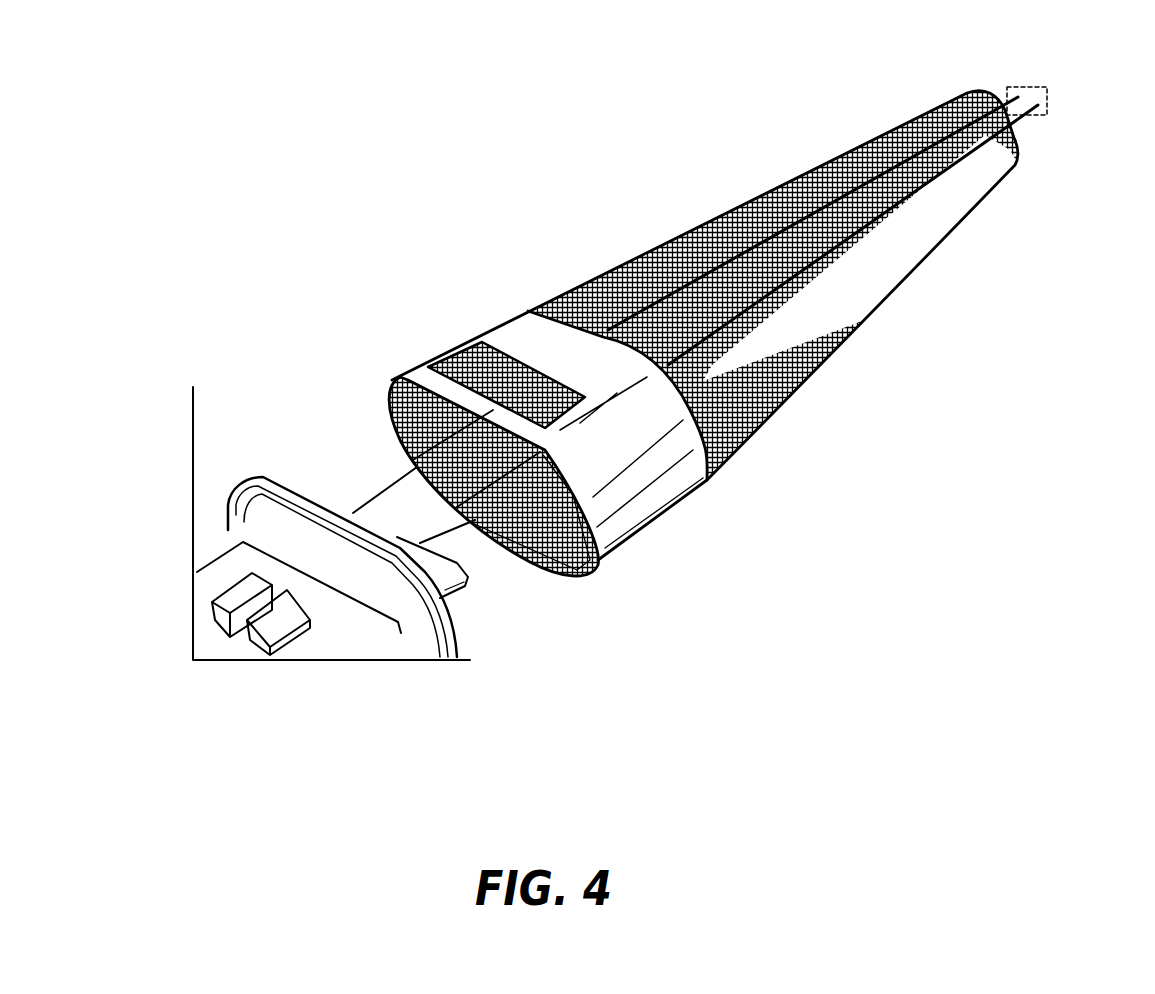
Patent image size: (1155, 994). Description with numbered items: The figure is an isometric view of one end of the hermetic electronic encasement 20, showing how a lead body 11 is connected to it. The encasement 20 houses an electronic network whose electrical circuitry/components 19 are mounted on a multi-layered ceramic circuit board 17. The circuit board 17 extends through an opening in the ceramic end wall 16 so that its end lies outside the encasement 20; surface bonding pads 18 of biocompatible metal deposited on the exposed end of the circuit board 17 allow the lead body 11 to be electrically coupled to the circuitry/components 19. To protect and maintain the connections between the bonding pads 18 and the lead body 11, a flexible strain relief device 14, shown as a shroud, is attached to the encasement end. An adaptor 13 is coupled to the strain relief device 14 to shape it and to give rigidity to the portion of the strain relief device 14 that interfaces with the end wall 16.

The lead body 11 is at (1045, 96).
The adaptor 13 is at (657, 490).
The flexible strain relief device 14 is at (873, 317).
The end wall 16 is at (453, 623).
The circuit board 17 is at (210, 643).
The bonding pad 18 is at (463, 587).
The electrical circuitry/components 19 is at (243, 592).
The hermetic electronic encasement 20 is at (350, 240).